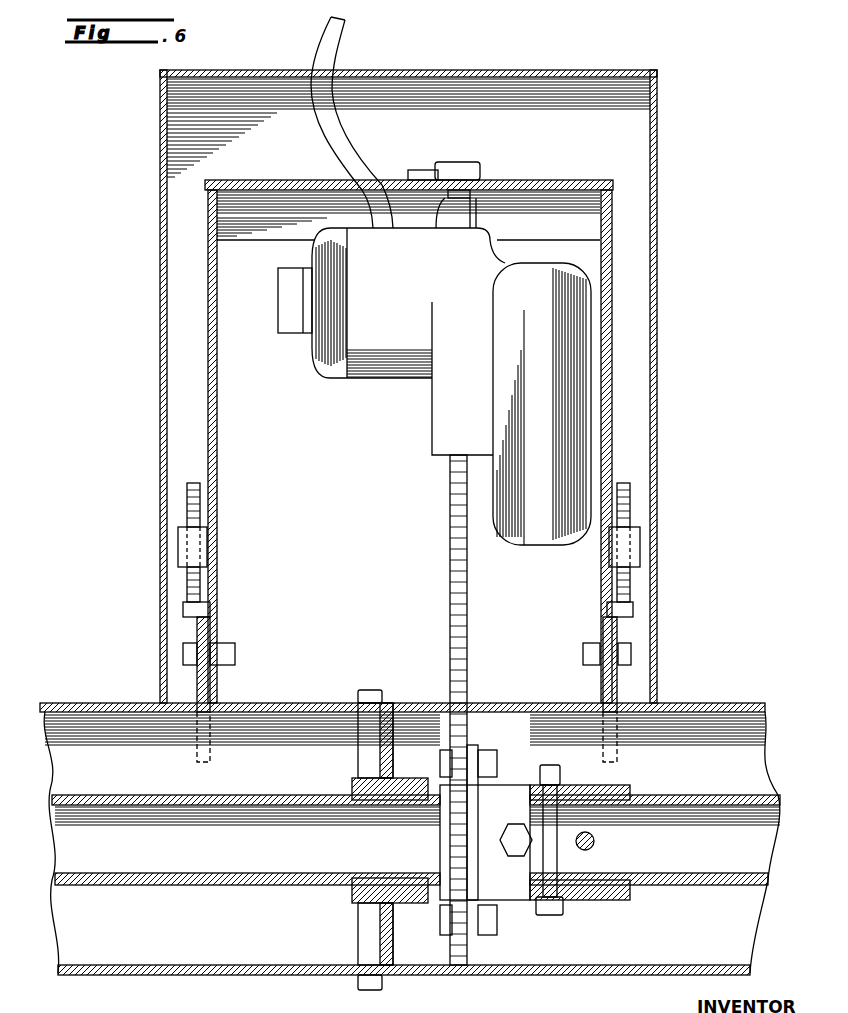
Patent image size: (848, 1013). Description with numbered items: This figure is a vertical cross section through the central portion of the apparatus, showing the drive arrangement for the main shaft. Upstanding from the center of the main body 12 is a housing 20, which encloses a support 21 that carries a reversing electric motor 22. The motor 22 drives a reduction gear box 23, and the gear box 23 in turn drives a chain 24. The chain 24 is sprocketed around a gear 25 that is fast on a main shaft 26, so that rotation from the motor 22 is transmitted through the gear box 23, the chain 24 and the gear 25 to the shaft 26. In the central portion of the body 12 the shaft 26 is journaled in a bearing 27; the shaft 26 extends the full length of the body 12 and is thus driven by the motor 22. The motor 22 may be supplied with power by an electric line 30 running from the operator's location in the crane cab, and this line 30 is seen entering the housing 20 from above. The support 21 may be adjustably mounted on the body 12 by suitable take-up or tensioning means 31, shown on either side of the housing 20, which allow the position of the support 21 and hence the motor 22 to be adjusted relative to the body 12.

The main body 12 is at (204, 975).
The housing 20 is at (657, 294).
The support 21 is at (611, 376).
The reversing electric motor 22 is at (370, 380).
The reduction gear box 23 is at (541, 543).
The chain 24 is at (450, 578).
The gear 25 is at (467, 947).
The main shaft 26 is at (670, 798).
The bearing 27 is at (355, 790).
The electric line 30 is at (340, 43).
The take-up or tensioning means 31 is at (617, 595).